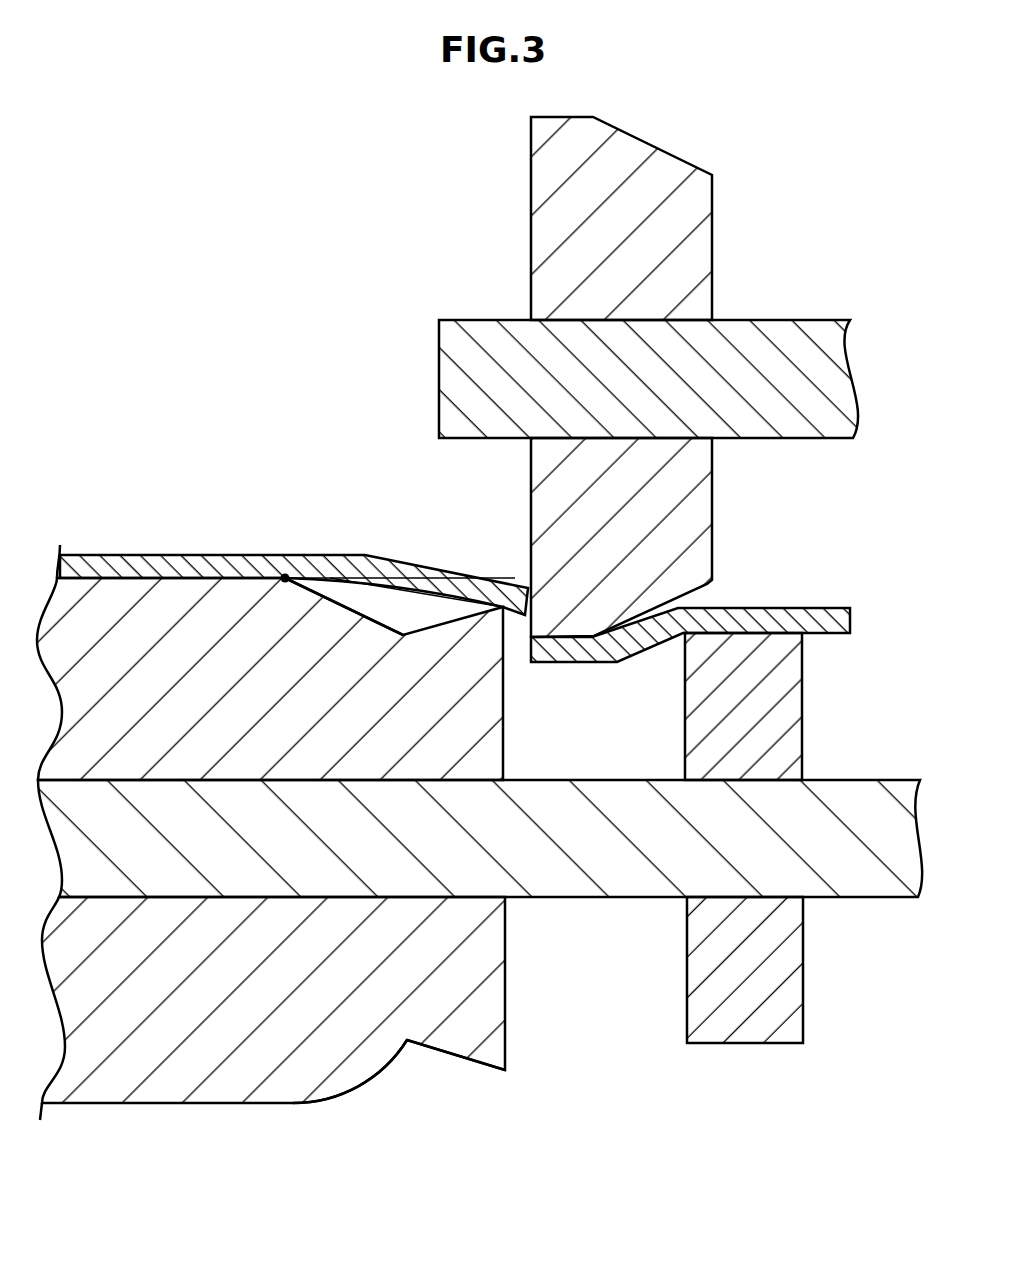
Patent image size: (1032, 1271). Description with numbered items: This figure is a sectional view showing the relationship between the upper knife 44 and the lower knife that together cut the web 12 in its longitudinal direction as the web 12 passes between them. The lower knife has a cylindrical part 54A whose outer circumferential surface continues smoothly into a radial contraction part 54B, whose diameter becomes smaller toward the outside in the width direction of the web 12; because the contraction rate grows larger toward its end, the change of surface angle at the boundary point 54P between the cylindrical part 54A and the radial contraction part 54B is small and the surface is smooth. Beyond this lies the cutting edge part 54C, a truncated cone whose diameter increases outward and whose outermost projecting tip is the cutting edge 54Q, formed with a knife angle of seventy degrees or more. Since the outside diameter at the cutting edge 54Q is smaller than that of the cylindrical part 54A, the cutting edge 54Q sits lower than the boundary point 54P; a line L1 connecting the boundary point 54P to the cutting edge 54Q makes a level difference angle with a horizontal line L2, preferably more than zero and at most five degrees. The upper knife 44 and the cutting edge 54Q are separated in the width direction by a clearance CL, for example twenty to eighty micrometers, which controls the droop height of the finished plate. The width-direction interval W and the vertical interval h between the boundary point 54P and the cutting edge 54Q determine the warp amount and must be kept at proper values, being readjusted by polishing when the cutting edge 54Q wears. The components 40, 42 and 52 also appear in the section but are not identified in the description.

The web 12 is at (163, 570).
The press forming apparatus 40 is at (386, 261).
The holder plate 42 is at (438, 337).
The upper knife 44 is at (531, 203).
The base plate 52 is at (588, 898).
The cylindrical part 54A is at (168, 1114).
The radial contraction part 54B is at (392, 1061).
The cutting edge part 54C is at (473, 1027).
The boundary point 54P is at (285, 575).
The cutting edge 54Q is at (532, 578).
The line connecting the boundary point to the cutting edge L1 is at (358, 605).
The horizontal line L2 is at (495, 579).
The clearance CL is at (453, 712).
The interval in the width direction W is at (506, 1077).
The interval in the vertical direction h is at (330, 1102).